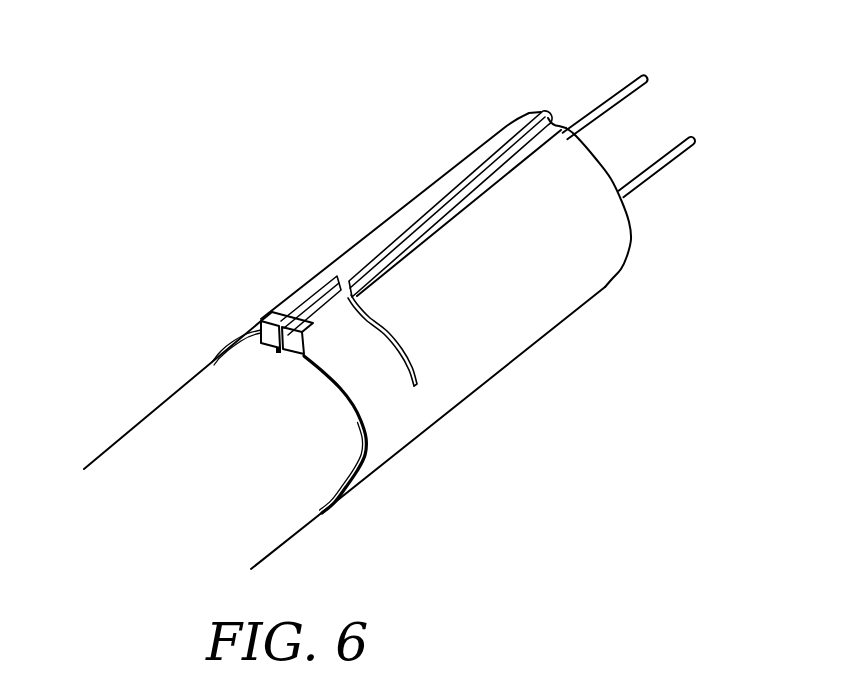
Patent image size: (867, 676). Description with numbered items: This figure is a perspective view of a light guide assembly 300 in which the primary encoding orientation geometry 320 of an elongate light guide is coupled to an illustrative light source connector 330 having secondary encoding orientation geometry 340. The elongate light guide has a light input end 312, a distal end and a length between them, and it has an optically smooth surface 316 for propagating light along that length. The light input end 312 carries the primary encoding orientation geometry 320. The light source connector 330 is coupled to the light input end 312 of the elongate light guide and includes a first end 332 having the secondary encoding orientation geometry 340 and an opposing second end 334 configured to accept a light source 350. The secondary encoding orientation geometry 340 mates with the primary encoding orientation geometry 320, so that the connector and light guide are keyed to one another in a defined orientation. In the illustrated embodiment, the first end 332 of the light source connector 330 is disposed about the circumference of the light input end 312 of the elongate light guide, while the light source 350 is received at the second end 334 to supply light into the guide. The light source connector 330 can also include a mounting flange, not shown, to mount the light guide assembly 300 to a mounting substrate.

The light guide assembly 300 is at (291, 255).
The light input end 312 is at (261, 367).
The optically smooth surface 316 is at (148, 418).
The primary encoding orientation geometry 320 is at (297, 312).
The light source connector 330 is at (492, 315).
The first end 332 is at (362, 437).
The second end 334 is at (634, 240).
The secondary encoding orientation geometry 340 is at (417, 215).
The light source 350 is at (608, 103).